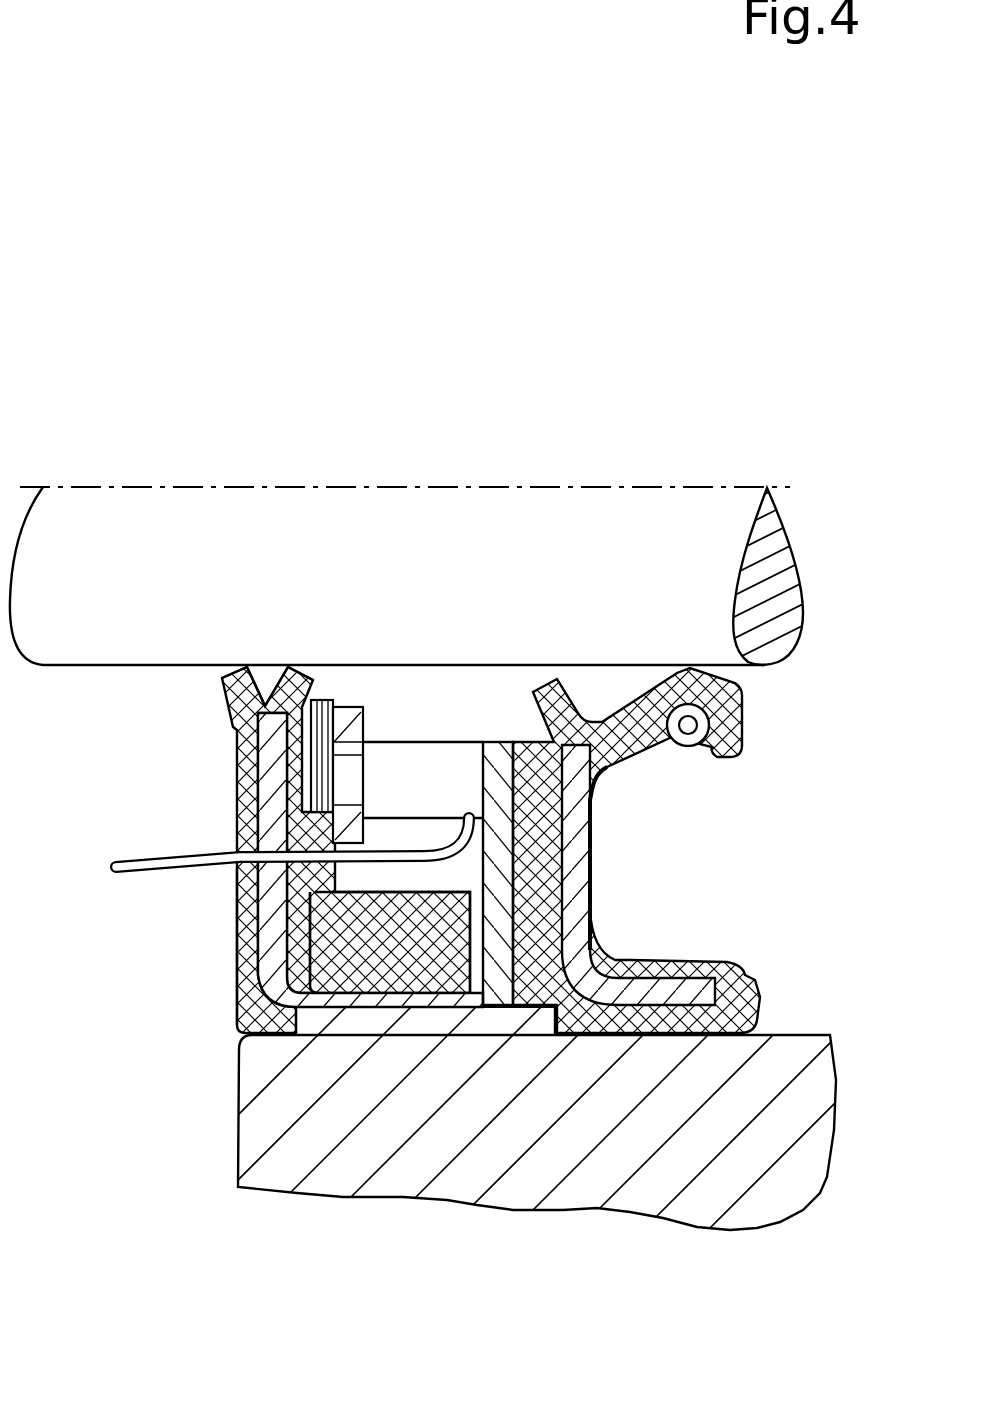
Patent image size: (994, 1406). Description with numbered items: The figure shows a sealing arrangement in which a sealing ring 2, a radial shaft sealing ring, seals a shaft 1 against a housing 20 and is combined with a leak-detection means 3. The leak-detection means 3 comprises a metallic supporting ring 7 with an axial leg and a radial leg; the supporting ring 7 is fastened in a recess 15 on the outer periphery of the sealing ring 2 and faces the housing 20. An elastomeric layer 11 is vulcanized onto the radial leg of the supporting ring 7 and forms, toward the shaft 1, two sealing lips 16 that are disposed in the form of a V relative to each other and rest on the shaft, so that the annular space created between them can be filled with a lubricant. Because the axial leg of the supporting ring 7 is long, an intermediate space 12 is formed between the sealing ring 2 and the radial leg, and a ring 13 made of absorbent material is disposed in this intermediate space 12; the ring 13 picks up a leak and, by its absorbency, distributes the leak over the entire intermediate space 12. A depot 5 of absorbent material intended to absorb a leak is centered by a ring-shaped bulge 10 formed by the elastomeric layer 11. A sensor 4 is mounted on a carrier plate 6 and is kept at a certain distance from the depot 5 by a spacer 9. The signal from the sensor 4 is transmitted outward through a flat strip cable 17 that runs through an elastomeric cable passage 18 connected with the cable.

The shaft 1 is at (427, 547).
The sealing ring 2 is at (618, 932).
The leak-detection means 3 is at (233, 758).
The sensor 4 is at (432, 790).
The depot 5 is at (320, 703).
The carrier plate 6 is at (495, 775).
The supporting ring 7 is at (287, 1017).
The spacer 9 is at (345, 727).
The ring-shaped bulge 10 is at (315, 832).
The elastomeric layer 11 is at (300, 988).
The intermediate space 12 is at (310, 930).
The ring 13 is at (360, 960).
The recess 15 is at (558, 1043).
The sealing lips 16 is at (242, 688).
The flat strip cable 17 is at (138, 873).
The cable passage 18 is at (237, 867).
The housing 20 is at (740, 1163).